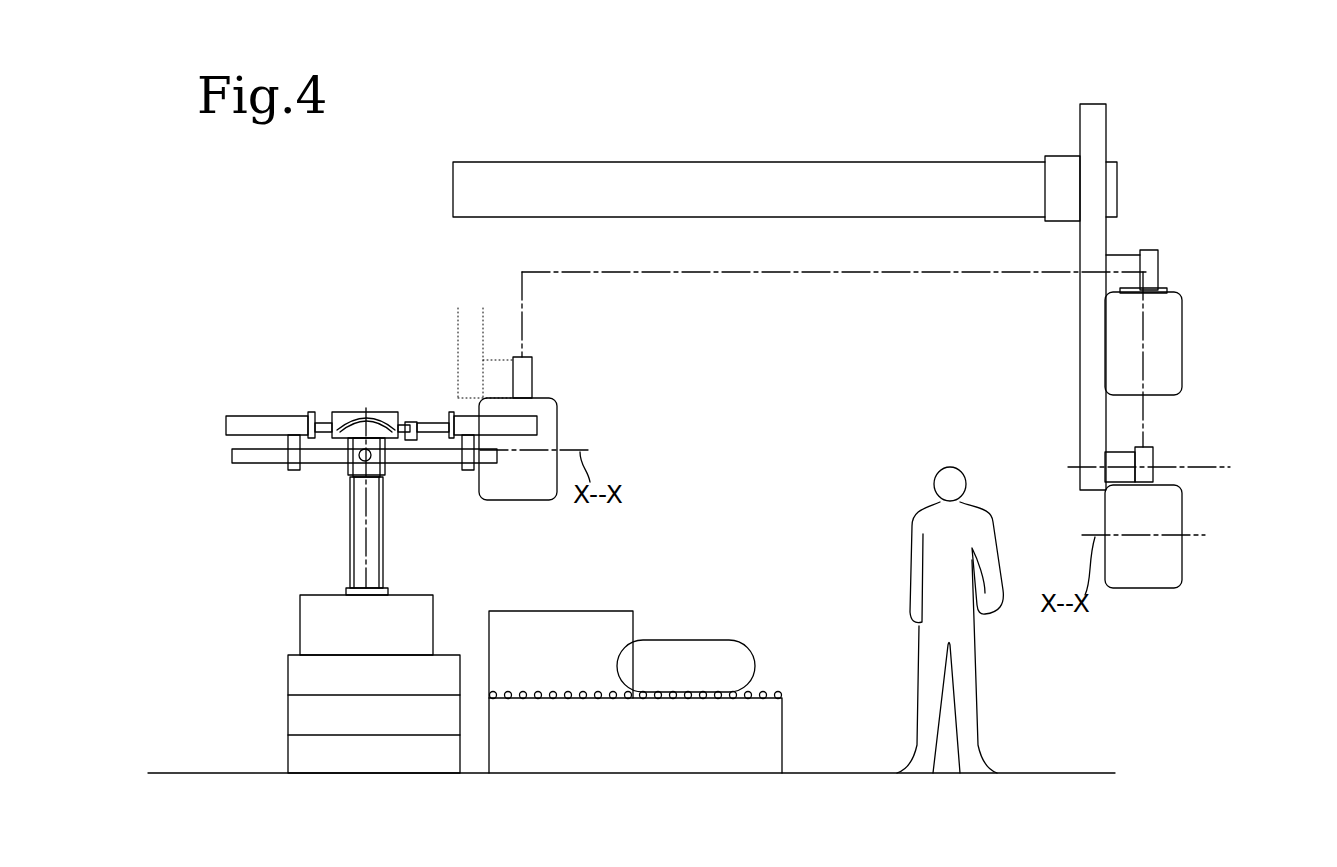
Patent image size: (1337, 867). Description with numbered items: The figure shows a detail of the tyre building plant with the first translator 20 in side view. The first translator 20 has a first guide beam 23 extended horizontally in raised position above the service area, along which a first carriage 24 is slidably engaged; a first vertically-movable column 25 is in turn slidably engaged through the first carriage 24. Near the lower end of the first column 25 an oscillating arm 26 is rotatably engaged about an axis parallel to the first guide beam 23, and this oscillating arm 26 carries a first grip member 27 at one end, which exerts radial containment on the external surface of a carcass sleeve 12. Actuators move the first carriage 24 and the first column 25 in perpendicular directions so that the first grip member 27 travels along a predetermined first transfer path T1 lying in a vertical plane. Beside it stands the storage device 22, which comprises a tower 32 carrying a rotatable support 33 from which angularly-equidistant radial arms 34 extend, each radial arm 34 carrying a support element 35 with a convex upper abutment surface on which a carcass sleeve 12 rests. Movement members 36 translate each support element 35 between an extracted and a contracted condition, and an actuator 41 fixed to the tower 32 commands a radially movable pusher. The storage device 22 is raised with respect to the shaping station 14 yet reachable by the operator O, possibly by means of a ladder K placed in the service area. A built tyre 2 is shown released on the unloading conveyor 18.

The built green tyre 2 is at (685, 640).
The carcass sleeve 12 is at (1182, 328).
The shaping station 14 is at (294, 622).
The unloading conveyor 18 is at (782, 722).
The first translator 20 is at (836, 253).
The storage device 22 is at (381, 431).
The first guide beam 23 is at (870, 178).
The first carriage 24 is at (1066, 173).
The first vertically-movable column 25 is at (1097, 235).
The oscillating arm 26 is at (1145, 457).
The first grip member 27 is at (1160, 473).
The tower 32 is at (359, 522).
The rotatable support 33 is at (388, 478).
The radial arm 34 is at (243, 463).
The support element 35 is at (267, 412).
The movement members 36 is at (417, 396).
The actuator 41 is at (398, 417).
The ladder K is at (301, 657).
The operator O is at (893, 553).
The first transfer path T1 is at (848, 274).